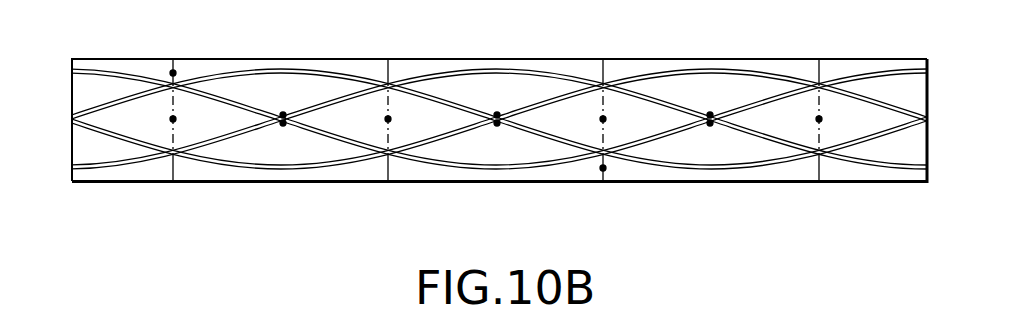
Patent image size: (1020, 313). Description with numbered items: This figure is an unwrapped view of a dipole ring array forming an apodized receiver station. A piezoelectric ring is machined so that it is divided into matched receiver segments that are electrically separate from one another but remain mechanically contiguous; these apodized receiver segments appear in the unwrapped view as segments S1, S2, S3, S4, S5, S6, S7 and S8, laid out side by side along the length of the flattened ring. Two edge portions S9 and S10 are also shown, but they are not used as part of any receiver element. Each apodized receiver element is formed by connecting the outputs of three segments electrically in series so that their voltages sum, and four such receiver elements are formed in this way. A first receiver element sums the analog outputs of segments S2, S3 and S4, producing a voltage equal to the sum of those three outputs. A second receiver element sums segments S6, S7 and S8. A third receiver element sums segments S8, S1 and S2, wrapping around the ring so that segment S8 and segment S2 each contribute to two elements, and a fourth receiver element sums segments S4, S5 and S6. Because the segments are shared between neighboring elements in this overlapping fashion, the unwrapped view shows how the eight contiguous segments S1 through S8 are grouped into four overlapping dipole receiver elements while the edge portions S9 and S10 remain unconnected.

The apodized receiver segment S1 is at (92, 192).
The apodized receiver segment S2 is at (193, 192).
The apodized receiver segment S3 is at (302, 192).
The apodized receiver segment S4 is at (410, 192).
The apodized receiver segment S5 is at (517, 192).
The apodized receiver segment S6 is at (625, 192).
The apodized receiver segment S7 is at (733, 192).
The apodized receiver segment S8 is at (840, 192).
The edge portion S9 is at (173, 73).
The edge portion S10 is at (603, 168).